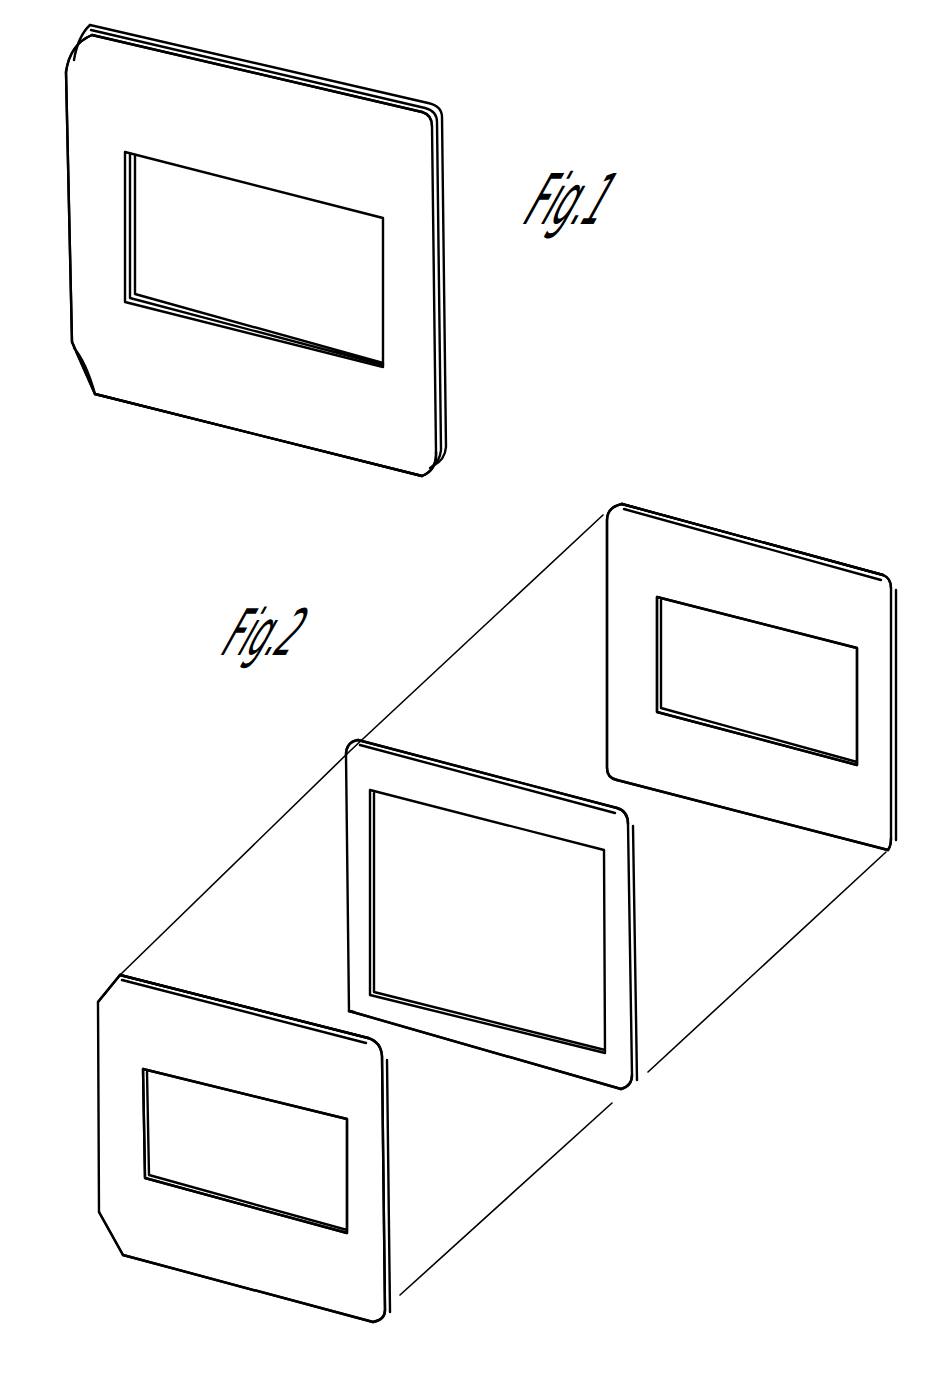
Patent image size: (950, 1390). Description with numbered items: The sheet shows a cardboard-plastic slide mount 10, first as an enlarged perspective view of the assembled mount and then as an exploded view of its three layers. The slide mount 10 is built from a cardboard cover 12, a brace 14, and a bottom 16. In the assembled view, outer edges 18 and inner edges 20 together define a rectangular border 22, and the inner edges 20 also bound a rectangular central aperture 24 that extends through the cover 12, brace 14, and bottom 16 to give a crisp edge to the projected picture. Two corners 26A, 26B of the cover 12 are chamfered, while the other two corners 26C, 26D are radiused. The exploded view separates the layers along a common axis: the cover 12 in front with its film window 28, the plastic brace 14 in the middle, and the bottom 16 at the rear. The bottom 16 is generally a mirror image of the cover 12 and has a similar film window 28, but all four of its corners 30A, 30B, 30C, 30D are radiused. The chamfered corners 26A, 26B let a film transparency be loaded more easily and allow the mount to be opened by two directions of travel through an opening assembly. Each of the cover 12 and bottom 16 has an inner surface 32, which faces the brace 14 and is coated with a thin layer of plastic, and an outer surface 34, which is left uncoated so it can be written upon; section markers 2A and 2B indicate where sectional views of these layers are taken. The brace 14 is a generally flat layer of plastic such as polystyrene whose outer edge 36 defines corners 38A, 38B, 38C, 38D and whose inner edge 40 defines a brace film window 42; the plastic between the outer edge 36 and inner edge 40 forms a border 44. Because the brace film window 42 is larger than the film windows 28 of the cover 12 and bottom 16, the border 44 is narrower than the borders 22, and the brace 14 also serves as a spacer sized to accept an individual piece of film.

In FIG. 1, the slide mount 10 is at (330, 251).
In FIG. 1, the cardboard cover 12 is at (268, 80).
In FIG. 2, the cardboard cover 12 is at (259, 1127).
In FIG. 1, the brace 14 is at (340, 88).
In FIG. 2, the brace 14 is at (478, 908).
In FIG. 1, the bottom 16 is at (400, 100).
In FIG. 2, the bottom 16 is at (711, 686).
In FIG. 1, the outer edges 18 is at (228, 60).
In FIG. 1, the inner edges 20 is at (317, 200).
In FIG. 1, the rectangular border 22 is at (273, 418).
In FIG. 2, the rectangular border 22 is at (607, 678).
In FIG. 1, the central aperture 24 is at (314, 259).
In FIG. 1, the chamfered corner 26A is at (92, 28).
In FIG. 2, the chamfered corner 26A is at (112, 989).
In FIG. 1, the chamfered corner 26B is at (84, 366).
In FIG. 2, the chamfered corner 26B is at (112, 1237).
In FIG. 1, the radiused corner 26C is at (435, 467).
In FIG. 2, the radiused corner 26C is at (380, 1316).
In FIG. 1, the radiused corner 26D is at (420, 132).
In FIG. 2, the radiused corner 26D is at (385, 1060).
In FIG. 2, the film window 28 is at (700, 641).
In FIG. 2, the radiused corner 30A is at (613, 505).
In FIG. 2, the radiused corner 30B is at (607, 771).
In FIG. 2, the radiused corner 30C is at (890, 855).
In FIG. 2, the radiused corner 30D is at (893, 585).
In FIG. 2, the inner surface 32 is at (720, 528).
In FIG. 2, the outer surface 34 is at (808, 548).
In FIG. 2, the outer edge 36 is at (396, 756).
In FIG. 2, the corner 38A is at (348, 745).
In FIG. 2, the corner 38B is at (347, 1012).
In FIG. 2, the corner 38C is at (632, 1088).
In FIG. 2, the corner 38D is at (629, 818).
In FIG. 2, the inner edge 40 is at (428, 806).
In FIG. 2, the brace film window 42 is at (530, 921).
In FIG. 2, the border 44 is at (516, 1055).
In FIG. 2, the section line 2A is at (85, 1087).
In FIG. 2, the section line 2B is at (585, 607).